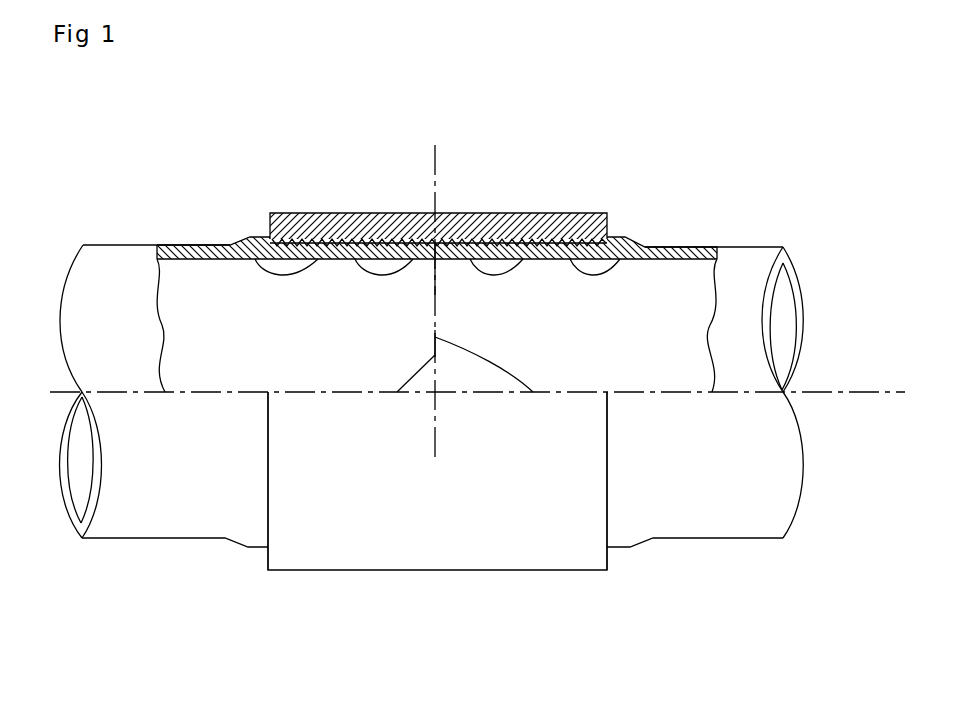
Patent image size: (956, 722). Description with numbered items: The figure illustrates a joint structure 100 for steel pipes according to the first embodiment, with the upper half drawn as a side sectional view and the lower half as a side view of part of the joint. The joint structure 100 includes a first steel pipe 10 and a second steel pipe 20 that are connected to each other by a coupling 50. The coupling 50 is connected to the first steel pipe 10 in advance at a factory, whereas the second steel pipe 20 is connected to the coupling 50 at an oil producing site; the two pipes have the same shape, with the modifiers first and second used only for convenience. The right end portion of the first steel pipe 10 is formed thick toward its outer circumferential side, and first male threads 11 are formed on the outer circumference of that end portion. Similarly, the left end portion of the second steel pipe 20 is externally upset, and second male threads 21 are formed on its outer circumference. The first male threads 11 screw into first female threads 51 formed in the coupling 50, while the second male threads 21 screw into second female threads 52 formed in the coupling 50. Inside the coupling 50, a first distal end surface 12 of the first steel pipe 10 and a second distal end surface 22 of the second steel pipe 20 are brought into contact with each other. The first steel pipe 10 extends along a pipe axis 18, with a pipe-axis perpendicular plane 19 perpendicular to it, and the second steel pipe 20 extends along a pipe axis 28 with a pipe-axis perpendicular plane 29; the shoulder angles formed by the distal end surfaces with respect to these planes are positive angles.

The joint structure 100 is at (215, 100).
The first steel pipe 10 is at (195, 245).
The first male threads 11 is at (240, 245).
The first distal end surface 12 is at (350, 240).
The pipe axis 18 is at (340, 395).
The pipe-axis perpendicular plane 19 is at (397, 392).
The second steel pipe 20 is at (688, 247).
The second male threads 21 is at (620, 247).
The second distal end surface 22 is at (530, 243).
The pipe axis 28 is at (483, 392).
The pipe-axis perpendicular plane 29 is at (533, 392).
The coupling 50 is at (380, 240).
The first female threads 51 is at (407, 243).
The second female threads 52 is at (508, 243).